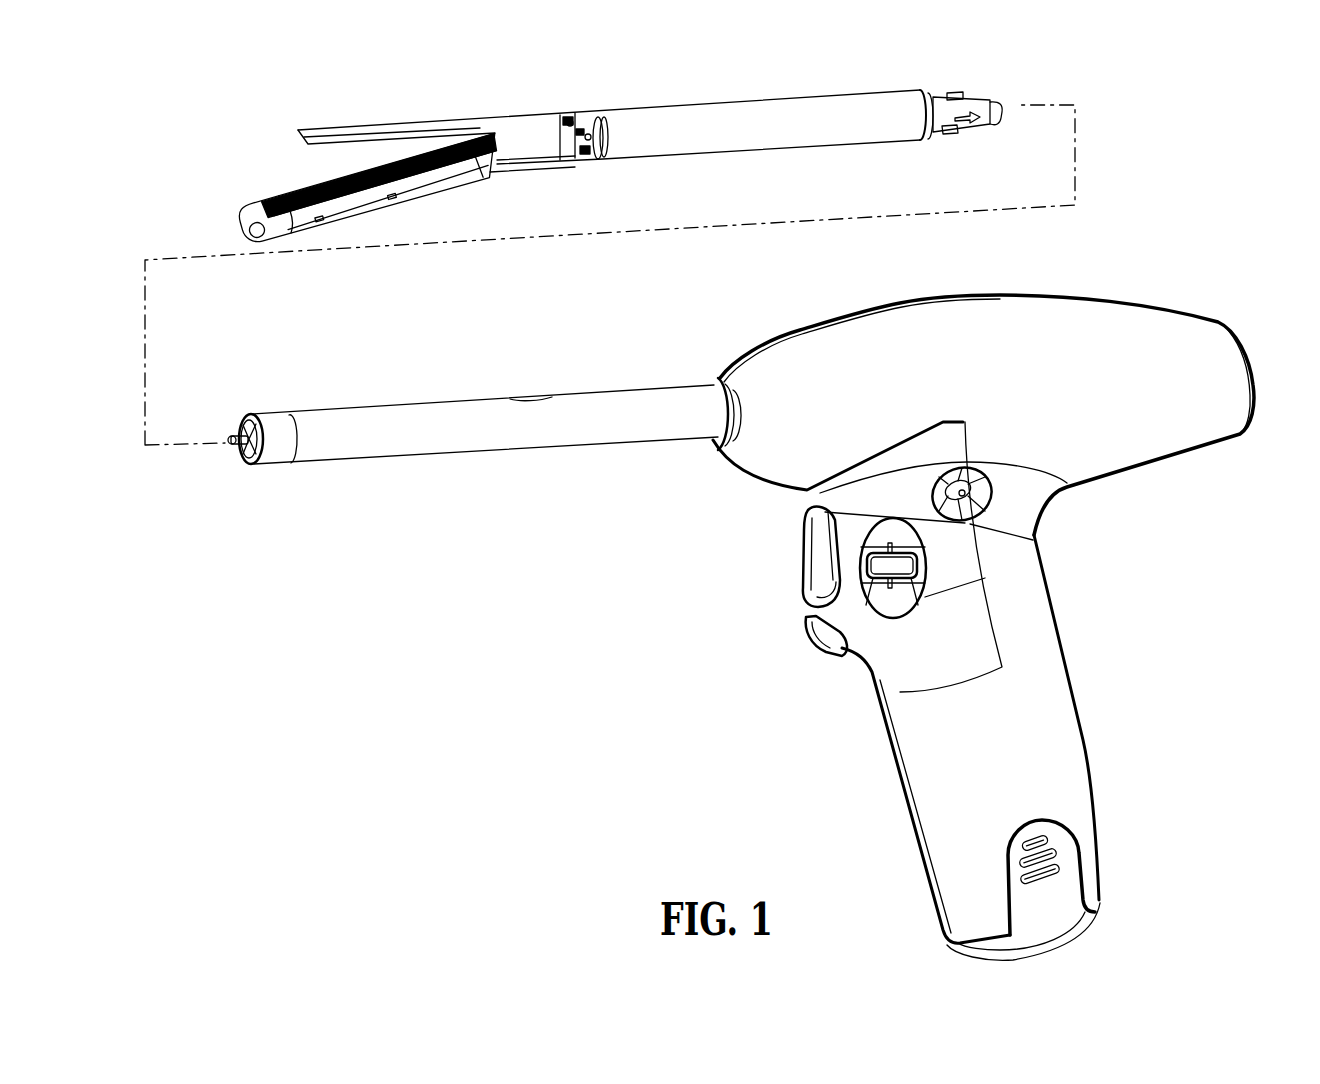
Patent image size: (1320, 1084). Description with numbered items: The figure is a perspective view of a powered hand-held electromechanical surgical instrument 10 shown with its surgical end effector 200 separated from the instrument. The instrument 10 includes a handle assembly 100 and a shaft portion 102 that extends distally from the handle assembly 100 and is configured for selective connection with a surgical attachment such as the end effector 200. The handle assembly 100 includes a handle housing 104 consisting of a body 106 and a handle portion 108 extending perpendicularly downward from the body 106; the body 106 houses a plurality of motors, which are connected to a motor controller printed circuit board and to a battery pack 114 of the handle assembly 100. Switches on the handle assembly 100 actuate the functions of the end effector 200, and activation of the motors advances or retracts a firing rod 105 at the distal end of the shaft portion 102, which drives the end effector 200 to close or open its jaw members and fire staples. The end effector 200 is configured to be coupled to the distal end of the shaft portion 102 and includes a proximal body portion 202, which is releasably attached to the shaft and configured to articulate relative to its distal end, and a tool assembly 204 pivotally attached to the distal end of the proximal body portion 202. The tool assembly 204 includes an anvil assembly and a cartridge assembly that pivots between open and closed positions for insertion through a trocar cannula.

The surgical instrument 10 is at (724, 347).
The handle assembly 100 is at (781, 311).
The shaft portion 102 is at (485, 410).
The handle housing 104 is at (1125, 300).
The firing rod 105 is at (245, 462).
The body 106 is at (940, 322).
The handle portion 108 is at (1043, 690).
The battery pack 114 is at (1060, 917).
The surgical end effector 200 is at (553, 98).
The proximal body portion 202 is at (782, 102).
The tool assembly 204 is at (342, 127).